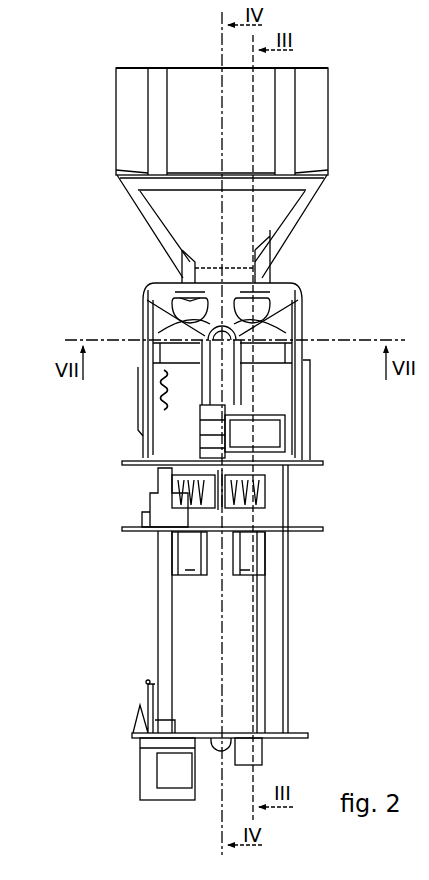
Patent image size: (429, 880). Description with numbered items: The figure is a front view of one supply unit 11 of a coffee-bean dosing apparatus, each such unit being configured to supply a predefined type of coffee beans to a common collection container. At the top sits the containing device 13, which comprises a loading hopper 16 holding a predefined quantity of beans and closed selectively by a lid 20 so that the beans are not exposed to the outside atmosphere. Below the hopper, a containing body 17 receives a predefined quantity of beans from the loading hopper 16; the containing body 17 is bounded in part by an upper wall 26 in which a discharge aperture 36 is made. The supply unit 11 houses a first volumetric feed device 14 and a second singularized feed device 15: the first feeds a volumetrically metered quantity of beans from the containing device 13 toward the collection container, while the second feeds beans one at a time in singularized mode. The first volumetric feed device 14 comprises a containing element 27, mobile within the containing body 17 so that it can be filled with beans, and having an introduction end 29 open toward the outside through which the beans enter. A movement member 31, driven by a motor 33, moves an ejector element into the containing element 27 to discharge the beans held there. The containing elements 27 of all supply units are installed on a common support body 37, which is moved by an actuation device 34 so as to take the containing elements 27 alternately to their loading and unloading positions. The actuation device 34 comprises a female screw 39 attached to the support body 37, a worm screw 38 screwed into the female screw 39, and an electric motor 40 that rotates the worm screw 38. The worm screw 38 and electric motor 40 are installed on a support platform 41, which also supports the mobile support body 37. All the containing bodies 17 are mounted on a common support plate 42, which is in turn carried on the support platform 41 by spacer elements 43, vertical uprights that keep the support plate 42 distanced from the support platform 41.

The supply unit 11 is at (99, 55).
The containing device 13 is at (310, 246).
The first volumetric feed device 14 is at (178, 288).
The second singularized feed device 15 is at (226, 384).
The loading hopper 16 is at (313, 123).
The containing body 17 is at (295, 350).
The lid 20 is at (163, 68).
The upper wall 26 is at (166, 288).
The containing element 27 is at (175, 298).
The introduction end 29 is at (197, 298).
The movement member 31 is at (186, 573).
The motor 33 is at (185, 543).
The actuation device 34 is at (123, 725).
The discharge aperture 36 is at (188, 305).
The support body 37 is at (307, 527).
The worm screw 38 is at (165, 635).
The female screw 39 is at (153, 513).
The electric motor 40 is at (172, 795).
The support platform 41 is at (303, 732).
The support plate 42 is at (128, 460).
The spacer elements 43 is at (273, 598).